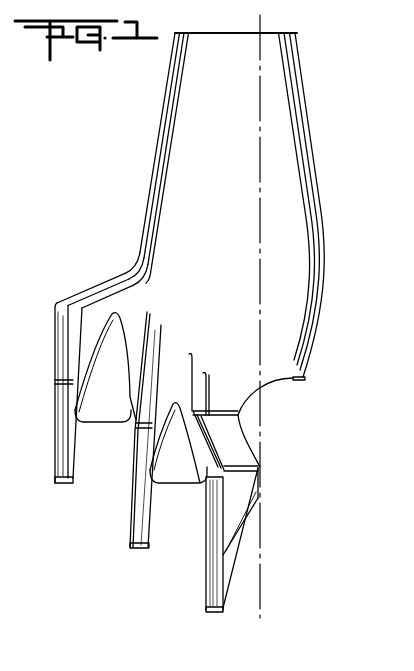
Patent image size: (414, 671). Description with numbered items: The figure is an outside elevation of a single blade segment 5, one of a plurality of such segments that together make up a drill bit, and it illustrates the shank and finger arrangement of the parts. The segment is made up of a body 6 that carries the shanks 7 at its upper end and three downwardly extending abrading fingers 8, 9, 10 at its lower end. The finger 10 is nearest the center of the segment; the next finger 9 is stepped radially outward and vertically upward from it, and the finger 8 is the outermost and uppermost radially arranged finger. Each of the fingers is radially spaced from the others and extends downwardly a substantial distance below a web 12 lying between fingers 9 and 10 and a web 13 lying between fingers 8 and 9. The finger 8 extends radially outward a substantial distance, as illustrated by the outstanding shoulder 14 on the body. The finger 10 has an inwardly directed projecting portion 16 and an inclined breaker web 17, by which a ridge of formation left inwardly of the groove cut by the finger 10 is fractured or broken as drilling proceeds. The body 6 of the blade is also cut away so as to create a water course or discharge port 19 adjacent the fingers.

The blade segment 5 is at (331, 306).
The body 6 is at (172, 268).
The shanks 7 is at (182, 80).
The abrading finger 8 is at (47, 447).
The abrading finger 9 is at (125, 529).
The abrading finger 10 is at (199, 585).
The web 12 is at (176, 486).
The web 13 is at (100, 423).
The outstanding shoulder 14 is at (103, 298).
The inwardly directed projecting portion 16 is at (260, 483).
The inclined breaker web 17 is at (243, 556).
The discharge port 19 is at (270, 386).